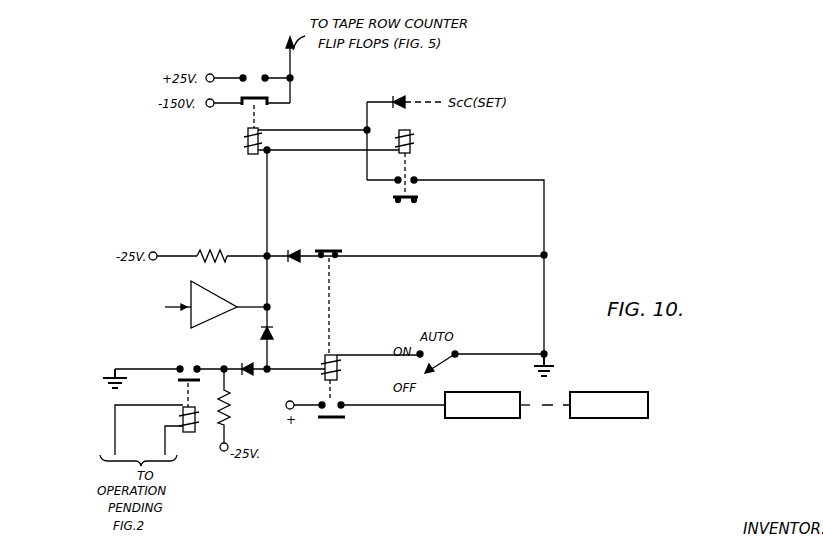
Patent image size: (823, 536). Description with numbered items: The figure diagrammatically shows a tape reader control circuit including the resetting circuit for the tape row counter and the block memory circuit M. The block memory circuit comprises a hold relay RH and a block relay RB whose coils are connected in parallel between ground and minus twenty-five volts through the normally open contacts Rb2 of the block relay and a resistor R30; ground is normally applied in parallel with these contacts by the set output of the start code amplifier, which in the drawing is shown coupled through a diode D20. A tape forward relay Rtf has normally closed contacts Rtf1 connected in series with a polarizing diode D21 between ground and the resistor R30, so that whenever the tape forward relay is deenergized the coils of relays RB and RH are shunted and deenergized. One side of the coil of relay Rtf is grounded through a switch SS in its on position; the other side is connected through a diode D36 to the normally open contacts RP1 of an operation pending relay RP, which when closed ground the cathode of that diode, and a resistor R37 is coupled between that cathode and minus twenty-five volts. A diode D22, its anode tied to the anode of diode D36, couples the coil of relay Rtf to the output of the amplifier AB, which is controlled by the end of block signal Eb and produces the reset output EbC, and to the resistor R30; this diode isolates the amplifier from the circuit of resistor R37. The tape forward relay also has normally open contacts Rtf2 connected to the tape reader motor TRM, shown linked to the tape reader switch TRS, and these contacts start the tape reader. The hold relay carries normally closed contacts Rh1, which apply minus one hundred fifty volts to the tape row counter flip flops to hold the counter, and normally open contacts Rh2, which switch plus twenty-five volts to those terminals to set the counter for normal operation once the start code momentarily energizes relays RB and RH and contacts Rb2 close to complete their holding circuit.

The normally open contacts Rh2 is at (253, 66).
The normally closed contacts Rh1 is at (265, 103).
The hold relay RH is at (246, 141).
The diode D20 is at (405, 97).
The block relay RB is at (417, 141).
The normally open contacts Rb2 is at (416, 179).
The block memory circuit M is at (583, 225).
The resistor R30 is at (228, 239).
The polarizing diode D21 is at (297, 250).
The normally closed contacts Rtf1 is at (330, 252).
The amplifier AB is at (214, 304).
The end of block signal Eb is at (167, 307).
The reset signal EbC is at (255, 306).
The diode D22 is at (285, 330).
The diode D36 is at (253, 354).
The normally open contacts RP1 is at (188, 356).
The resistor R37 is at (228, 416).
The operation pending relay RP is at (190, 435).
The tape forward relay Rtf is at (323, 375).
The switch SS is at (484, 356).
The normally open contacts Rtf2 is at (335, 423).
The tape reader motor TRM is at (482, 405).
The tape reader switch TRS is at (609, 405).